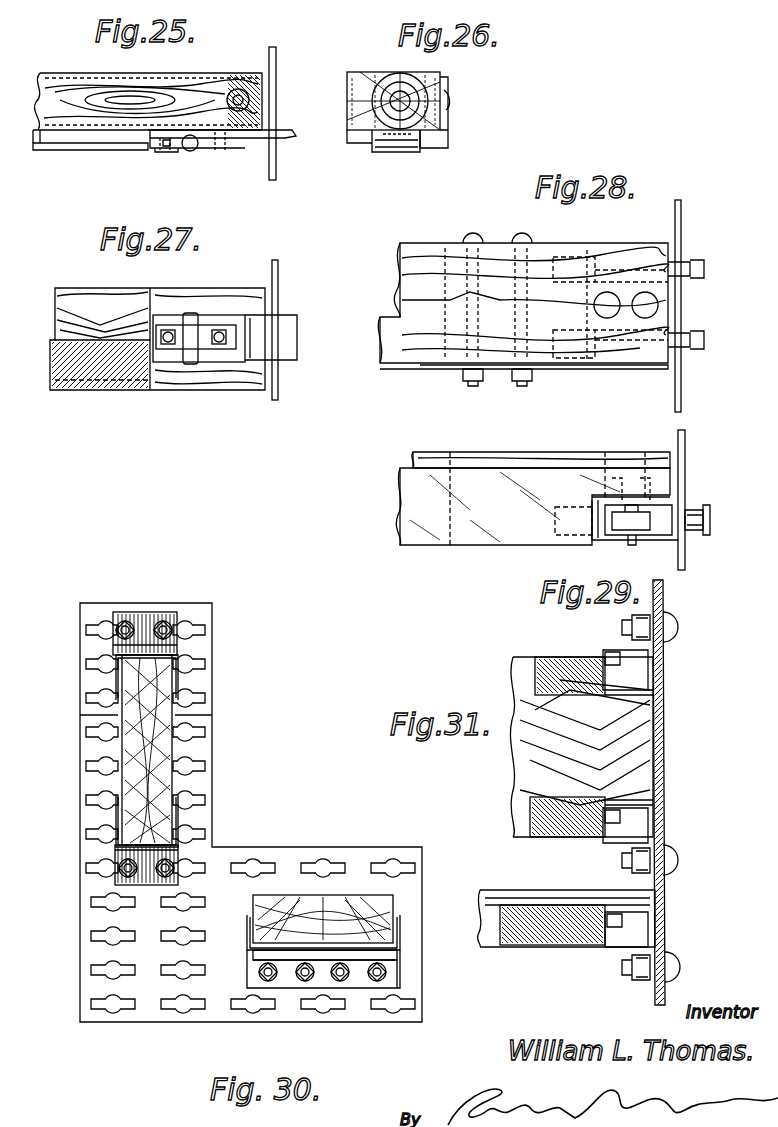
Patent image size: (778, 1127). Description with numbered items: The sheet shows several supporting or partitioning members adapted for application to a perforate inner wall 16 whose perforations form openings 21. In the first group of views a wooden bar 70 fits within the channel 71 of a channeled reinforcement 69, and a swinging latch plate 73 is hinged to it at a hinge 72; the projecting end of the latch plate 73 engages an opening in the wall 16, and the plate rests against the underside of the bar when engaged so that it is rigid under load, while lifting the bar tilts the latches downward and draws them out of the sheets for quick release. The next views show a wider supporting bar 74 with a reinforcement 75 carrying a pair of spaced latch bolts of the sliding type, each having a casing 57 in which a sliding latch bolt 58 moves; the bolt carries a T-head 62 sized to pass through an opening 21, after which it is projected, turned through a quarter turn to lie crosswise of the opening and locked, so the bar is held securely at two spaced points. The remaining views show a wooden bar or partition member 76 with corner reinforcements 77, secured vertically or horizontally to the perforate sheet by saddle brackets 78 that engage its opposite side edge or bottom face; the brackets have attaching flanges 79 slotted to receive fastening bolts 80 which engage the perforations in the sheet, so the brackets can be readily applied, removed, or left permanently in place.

In FIG. 25, the perforate inner wall 16 is at (278, 96).
In FIG. 27, the perforate inner wall 16 is at (280, 288).
In FIG. 28, the perforate inner wall 16 is at (682, 230).
In FIG. 29, the perforate inner wall 16 is at (687, 462).
In FIG. 30, the perforate inner wall 16 is at (78, 758).
In FIG. 31, the perforate inner wall 16 is at (665, 735).
In FIG. 30, the opening 21 is at (88, 868).
In FIG. 28, the casing 57 is at (598, 262).
In FIG. 29, the casing 57 is at (605, 540).
In FIG. 29, the sliding latch bolt 58 is at (702, 510).
In FIG. 29, the T-head 62 is at (711, 520).
In FIG. 25, the channeled reinforcement 69 is at (78, 150).
In FIG. 26, the channeled reinforcement 69 is at (358, 140).
In FIG. 25, the wooden bar 70 is at (72, 82).
In FIG. 26, the wooden bar 70 is at (372, 80).
In FIG. 25, the channel 71 is at (38, 118).
In FIG. 26, the channel 71 is at (452, 120).
In FIG. 27, the channel 71 is at (157, 355).
In FIG. 25, the hinge 72 is at (190, 151).
In FIG. 27, the hinge 72 is at (192, 316).
In FIG. 25, the swinging latch plate 73 is at (245, 148).
In FIG. 26, the swinging latch plate 73 is at (397, 152).
In FIG. 27, the swinging latch plate 73 is at (240, 362).
In FIG. 28, the bar 74 is at (440, 355).
In FIG. 29, the bar 74 is at (478, 478).
In FIG. 29, the reinforcement 75 is at (555, 458).
In FIG. 30, the bar or partition member 76 is at (122, 740).
In FIG. 31, the bar or partition member 76 is at (512, 760).
In FIG. 30, the corner reinforcements 77 is at (178, 660).
In FIG. 31, the corner reinforcements 77 is at (562, 662).
In FIG. 30, the saddle brackets 78 is at (150, 630).
In FIG. 31, the saddle brackets 78 is at (628, 672).
In FIG. 30, the attaching flanges 79 is at (113, 648).
In FIG. 31, the attaching flanges 79 is at (655, 858).
In FIG. 30, the fastening bolts 80 is at (170, 628).
In FIG. 31, the fastening bolts 80 is at (630, 972).